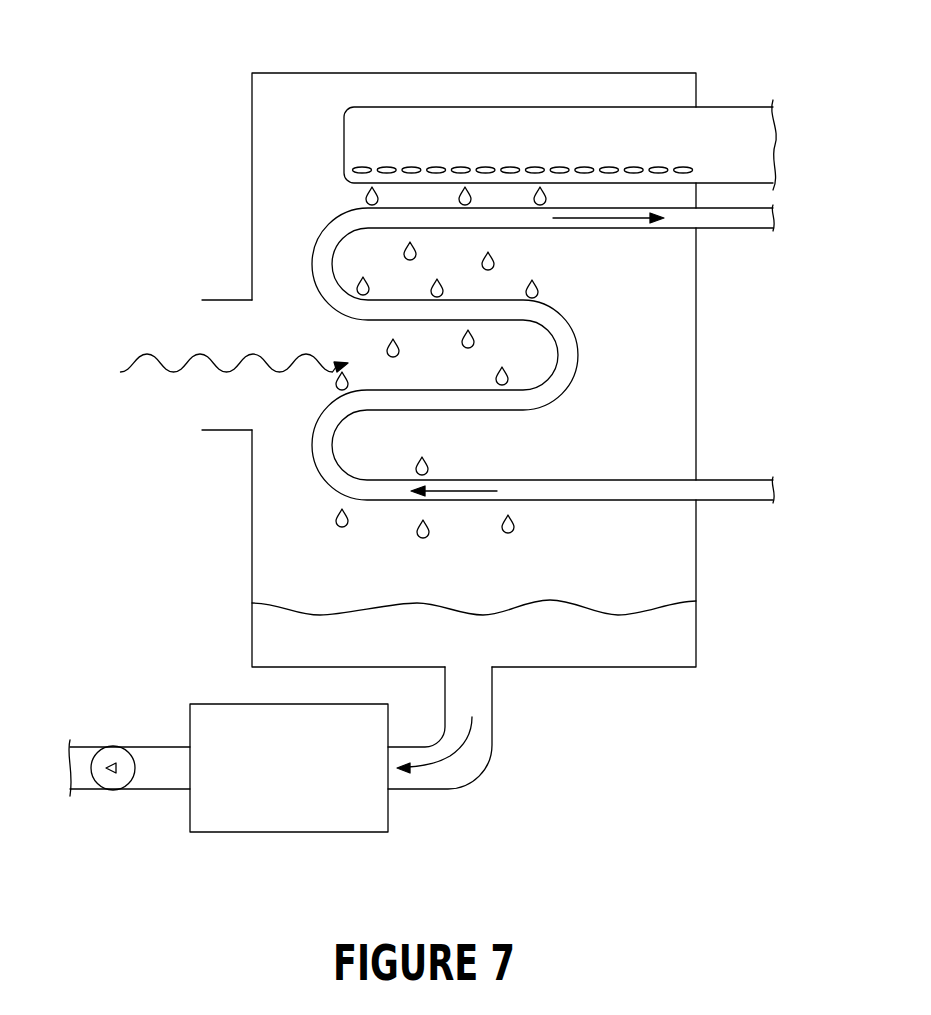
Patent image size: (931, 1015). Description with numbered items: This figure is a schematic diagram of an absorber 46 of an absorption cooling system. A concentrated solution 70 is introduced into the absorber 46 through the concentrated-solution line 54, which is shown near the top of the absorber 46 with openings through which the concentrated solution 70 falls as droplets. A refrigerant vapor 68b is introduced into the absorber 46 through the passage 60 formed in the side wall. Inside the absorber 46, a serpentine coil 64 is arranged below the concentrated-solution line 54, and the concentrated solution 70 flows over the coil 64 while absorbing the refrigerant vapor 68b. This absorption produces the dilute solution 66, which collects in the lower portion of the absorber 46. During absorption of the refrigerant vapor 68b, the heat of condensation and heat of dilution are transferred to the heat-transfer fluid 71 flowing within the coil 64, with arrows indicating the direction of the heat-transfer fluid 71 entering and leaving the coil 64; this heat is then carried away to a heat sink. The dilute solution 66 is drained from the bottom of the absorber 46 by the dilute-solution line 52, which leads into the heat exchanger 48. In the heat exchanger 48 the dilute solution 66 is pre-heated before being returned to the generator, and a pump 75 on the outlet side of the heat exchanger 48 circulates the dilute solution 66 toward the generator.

The absorber 46 is at (612, 73).
The concentrated-solution line 54 is at (733, 107).
The passage 60 is at (222, 300).
The refrigerant vapor 68b is at (145, 352).
The concentrated solution 70 is at (496, 261).
The heat-transfer fluid 71 is at (612, 222).
The coil 64 is at (572, 385).
The dilute solution 66 is at (416, 651).
The dilute-solution line 52 is at (492, 712).
The heat exchanger 48 is at (388, 810).
The pump 75 is at (93, 790).